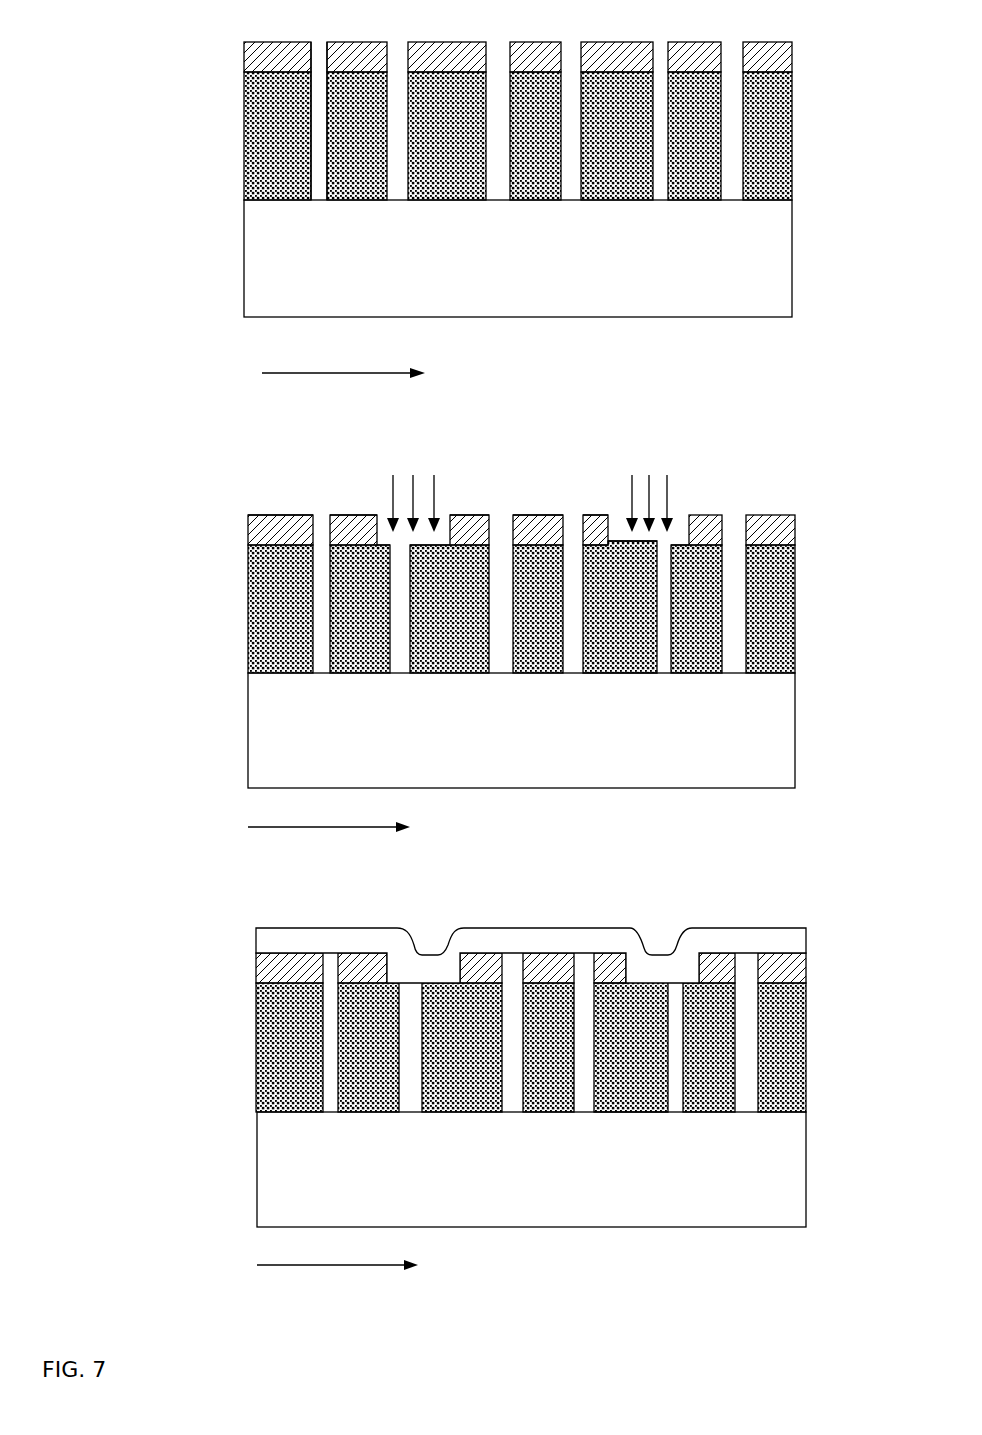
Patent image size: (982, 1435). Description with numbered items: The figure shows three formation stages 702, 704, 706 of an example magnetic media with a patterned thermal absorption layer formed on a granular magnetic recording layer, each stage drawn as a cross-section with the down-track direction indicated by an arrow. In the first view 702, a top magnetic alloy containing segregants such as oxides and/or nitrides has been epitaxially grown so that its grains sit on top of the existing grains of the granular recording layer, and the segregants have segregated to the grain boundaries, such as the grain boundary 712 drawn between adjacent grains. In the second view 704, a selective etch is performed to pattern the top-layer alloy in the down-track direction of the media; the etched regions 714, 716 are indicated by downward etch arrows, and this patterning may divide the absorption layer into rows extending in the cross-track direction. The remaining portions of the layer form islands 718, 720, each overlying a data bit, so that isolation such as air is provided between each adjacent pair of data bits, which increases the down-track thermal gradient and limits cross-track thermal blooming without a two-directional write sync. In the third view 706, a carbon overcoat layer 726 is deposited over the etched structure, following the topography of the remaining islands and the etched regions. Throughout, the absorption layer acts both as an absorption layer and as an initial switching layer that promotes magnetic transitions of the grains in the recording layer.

The view 702 is at (483, 191).
The view 704 is at (493, 624).
The view 706 is at (500, 1086).
The grain boundary 712 is at (316, 53).
The first etched region 714 is at (450, 477).
The second etched region 716 is at (686, 473).
The island 718 is at (377, 512).
The island 720 is at (450, 512).
The carbon overcoat layer 726 is at (775, 936).